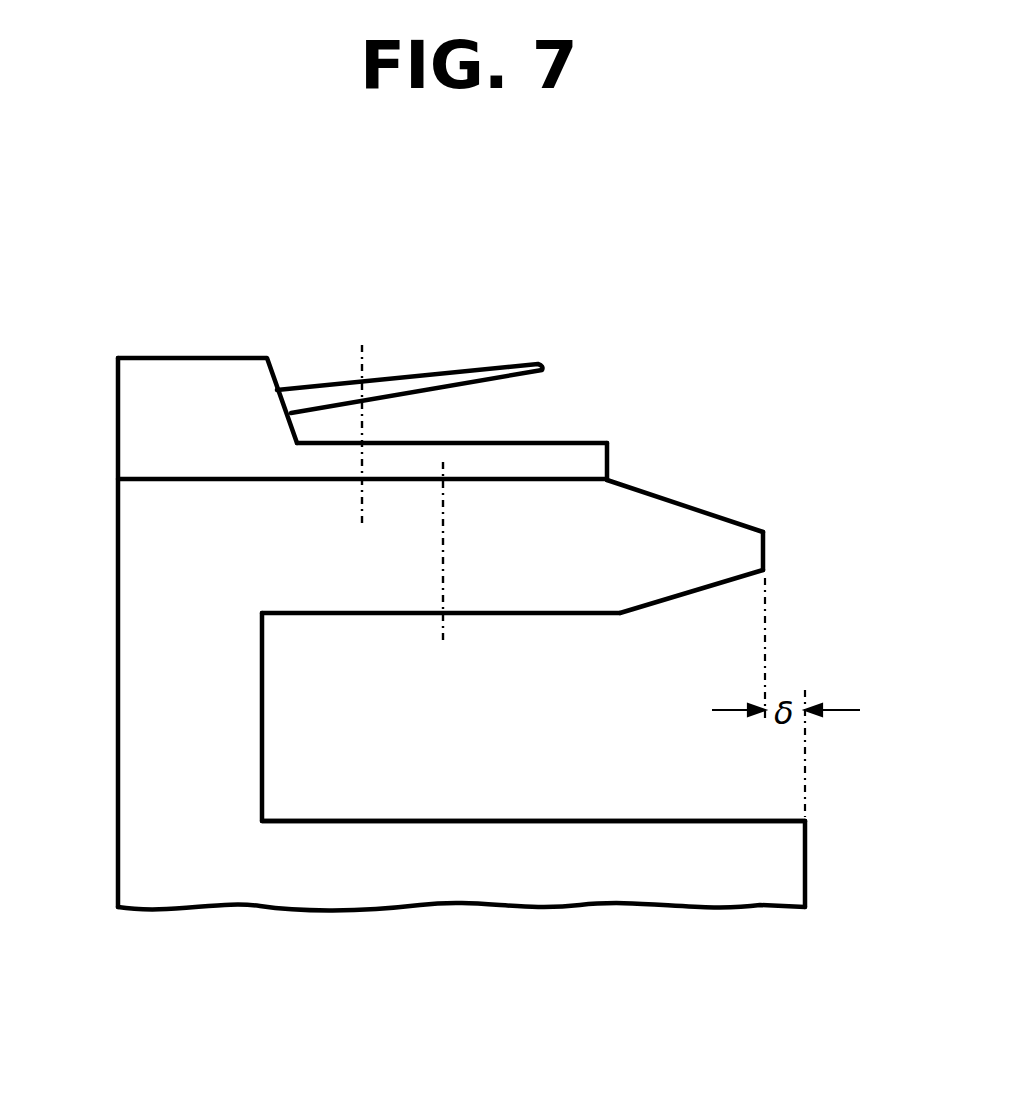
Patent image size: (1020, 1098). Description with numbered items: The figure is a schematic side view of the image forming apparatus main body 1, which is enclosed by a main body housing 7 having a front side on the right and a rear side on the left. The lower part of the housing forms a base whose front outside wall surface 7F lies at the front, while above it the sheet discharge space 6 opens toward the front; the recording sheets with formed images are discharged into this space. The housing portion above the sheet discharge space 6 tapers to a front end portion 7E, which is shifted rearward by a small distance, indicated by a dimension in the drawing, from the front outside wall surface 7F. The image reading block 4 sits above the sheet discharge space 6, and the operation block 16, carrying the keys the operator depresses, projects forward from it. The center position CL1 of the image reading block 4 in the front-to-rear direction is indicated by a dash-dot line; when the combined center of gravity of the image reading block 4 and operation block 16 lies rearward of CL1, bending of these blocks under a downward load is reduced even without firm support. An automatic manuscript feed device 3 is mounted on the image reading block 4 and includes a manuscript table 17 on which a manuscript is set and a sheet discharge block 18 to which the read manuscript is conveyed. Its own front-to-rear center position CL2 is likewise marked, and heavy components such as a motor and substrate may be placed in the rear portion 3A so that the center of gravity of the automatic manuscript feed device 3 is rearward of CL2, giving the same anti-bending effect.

The image forming apparatus main body 1 is at (108, 757).
The automatic manuscript feed device 3 is at (568, 441).
The portion of the automatic manuscript feed device 3A is at (196, 376).
The image reading block 4 is at (348, 596).
The sheet discharge space 6 is at (544, 752).
The main body housing 7 is at (808, 847).
The front end portion 7E is at (768, 546).
The front outside wall surface 7F is at (808, 878).
The operation block 16 is at (668, 518).
The manuscript table 17 is at (445, 364).
The sheet discharge block 18 is at (456, 441).
The center position of the image reading block CL1 is at (442, 578).
The center position of the automatic manuscript feed device CL2 is at (360, 416).